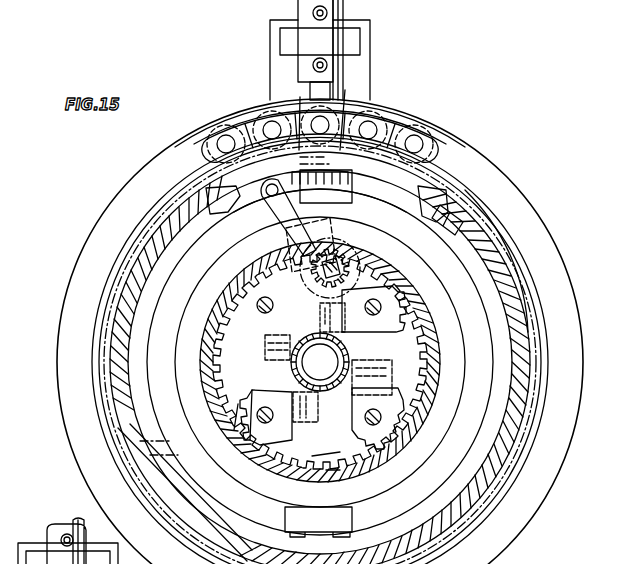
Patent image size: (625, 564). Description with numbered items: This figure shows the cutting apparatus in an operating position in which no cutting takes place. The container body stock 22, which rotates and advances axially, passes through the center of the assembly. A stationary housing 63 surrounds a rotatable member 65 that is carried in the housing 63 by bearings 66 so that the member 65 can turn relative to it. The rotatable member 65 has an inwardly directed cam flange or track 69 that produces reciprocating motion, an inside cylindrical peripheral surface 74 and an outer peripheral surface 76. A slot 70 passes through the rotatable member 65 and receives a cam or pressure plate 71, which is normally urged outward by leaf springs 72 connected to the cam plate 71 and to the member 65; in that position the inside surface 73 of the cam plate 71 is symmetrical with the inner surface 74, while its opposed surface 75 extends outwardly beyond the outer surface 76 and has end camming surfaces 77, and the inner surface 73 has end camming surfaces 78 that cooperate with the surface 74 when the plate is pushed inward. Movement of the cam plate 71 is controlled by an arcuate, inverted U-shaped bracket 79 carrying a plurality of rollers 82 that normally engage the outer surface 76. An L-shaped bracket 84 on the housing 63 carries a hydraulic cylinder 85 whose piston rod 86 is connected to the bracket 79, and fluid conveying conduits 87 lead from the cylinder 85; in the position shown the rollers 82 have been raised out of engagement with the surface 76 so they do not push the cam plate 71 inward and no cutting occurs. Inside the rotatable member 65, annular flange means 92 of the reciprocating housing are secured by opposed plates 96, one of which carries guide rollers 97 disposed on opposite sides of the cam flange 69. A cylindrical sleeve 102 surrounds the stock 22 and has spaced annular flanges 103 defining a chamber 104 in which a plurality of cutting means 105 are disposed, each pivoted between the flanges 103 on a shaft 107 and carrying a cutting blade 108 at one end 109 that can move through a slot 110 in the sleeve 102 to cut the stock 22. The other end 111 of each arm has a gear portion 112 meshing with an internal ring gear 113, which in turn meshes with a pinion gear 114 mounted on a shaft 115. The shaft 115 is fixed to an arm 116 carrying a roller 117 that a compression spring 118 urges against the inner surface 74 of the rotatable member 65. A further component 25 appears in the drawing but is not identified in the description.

The container body stock 22 is at (318, 330).
The drive unit 25 is at (48, 530).
The stationary housing 63 is at (60, 340).
The rotatable member 65 is at (500, 272).
The bearings 66 is at (98, 405).
The cam flange 69 is at (483, 447).
The slot 70 is at (228, 205).
The cam plate 71 is at (300, 97).
The leaf springs 72 is at (214, 204).
The inside surface 73 is at (360, 200).
The inside cylindrical peripheral surface 74 is at (507, 402).
The opposed surface 75 is at (350, 100).
The outer peripheral surface 76 is at (530, 395).
The end camming surfaces 77 is at (415, 188).
The end camming surfaces 78 is at (460, 215).
The U-shaped bracket 79 is at (245, 115).
The rollers 82 is at (215, 126).
The L-shaped bracket 84 is at (370, 45).
The hydraulic cylinder 85 is at (345, 12).
The piston rod 86 is at (335, 88).
The fluid conveying conduits 87 is at (312, 13).
The annular flange means 92 is at (462, 338).
The plates 96 is at (336, 208).
The guide rollers 97 is at (322, 178).
The cylindrical sleeve 102 is at (355, 350).
The annular flanges 103 is at (330, 456).
The chamber 104 is at (400, 440).
The cutting means 105 is at (385, 295).
The shaft 107 is at (256, 420).
The cutting blade 108 is at (290, 380).
The end 109 is at (300, 398).
The slot 110 is at (348, 332).
The other end 111 is at (257, 426).
The gear portion 112 is at (240, 440).
The internal ring gear 113 is at (332, 472).
The pinion gear 114 is at (384, 268).
The shaft 115 is at (345, 262).
The arm 116 is at (286, 232).
The roller 117 is at (261, 203).
The compression spring 118 is at (300, 260).